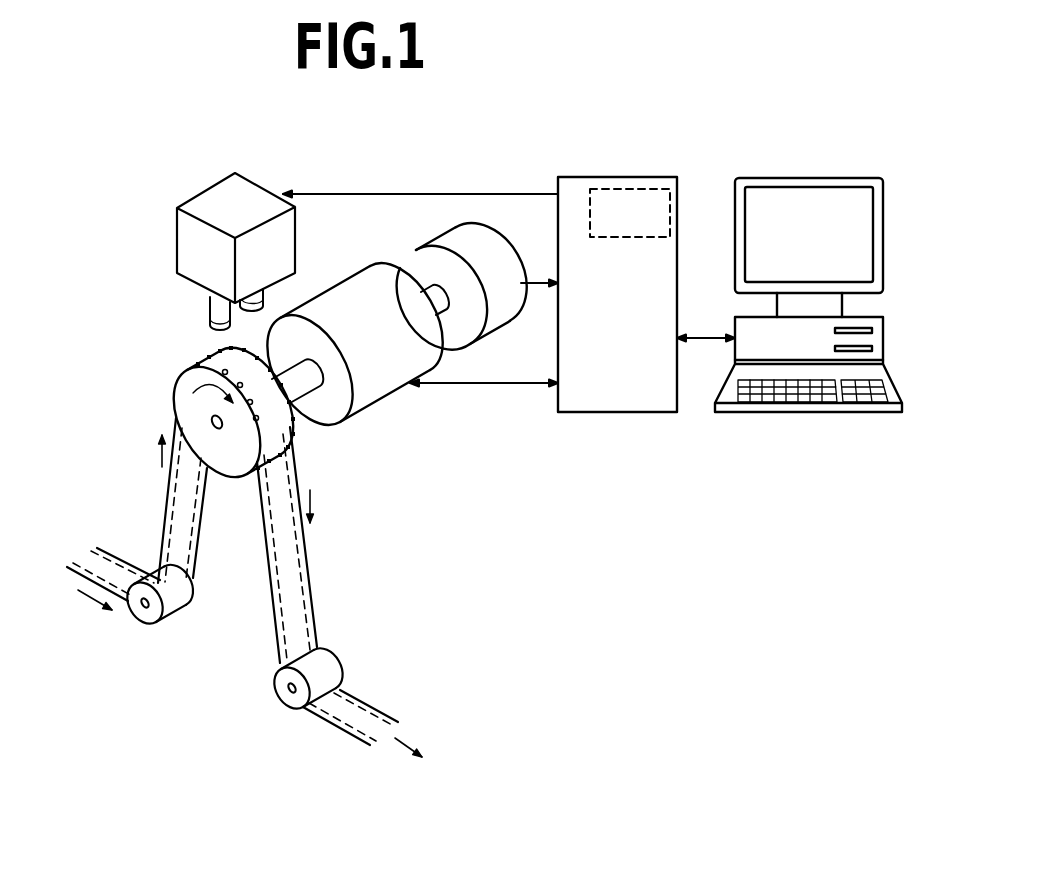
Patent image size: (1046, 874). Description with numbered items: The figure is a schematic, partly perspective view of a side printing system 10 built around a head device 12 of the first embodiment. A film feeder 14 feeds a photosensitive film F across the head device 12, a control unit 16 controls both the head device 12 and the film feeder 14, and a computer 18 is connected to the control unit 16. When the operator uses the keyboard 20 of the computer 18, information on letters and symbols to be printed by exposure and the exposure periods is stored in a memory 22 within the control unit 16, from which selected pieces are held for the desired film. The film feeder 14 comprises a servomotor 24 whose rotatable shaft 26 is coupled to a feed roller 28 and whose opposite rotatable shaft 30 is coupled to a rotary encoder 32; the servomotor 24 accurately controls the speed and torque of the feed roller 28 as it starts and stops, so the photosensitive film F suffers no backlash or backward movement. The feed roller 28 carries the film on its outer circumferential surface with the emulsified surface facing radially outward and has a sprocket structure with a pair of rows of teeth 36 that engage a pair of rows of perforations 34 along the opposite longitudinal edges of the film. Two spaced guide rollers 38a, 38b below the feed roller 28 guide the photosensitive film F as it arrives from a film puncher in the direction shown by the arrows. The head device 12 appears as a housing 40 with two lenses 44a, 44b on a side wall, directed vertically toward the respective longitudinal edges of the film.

The side printing system 10 is at (537, 74).
The head device 12 is at (238, 160).
The film feeder 14 is at (387, 422).
The control unit 16 is at (609, 172).
The computer 18 is at (795, 170).
The keyboard 20 is at (838, 415).
The memory 22 is at (675, 206).
The servomotor 24 is at (395, 388).
The rotatable shaft 26 is at (317, 412).
The feed roller 28 is at (175, 410).
The opposite rotatable shaft 30 is at (435, 295).
The rotary encoder 32 is at (494, 252).
The perforations 34 is at (198, 510).
The teeth 36 is at (290, 404).
The guide roller 38a is at (144, 626).
The guide roller 38b is at (338, 665).
The housing 40 is at (206, 196).
The lens 44a is at (214, 307).
The lens 44b is at (265, 300).
The photosensitive film F is at (315, 570).